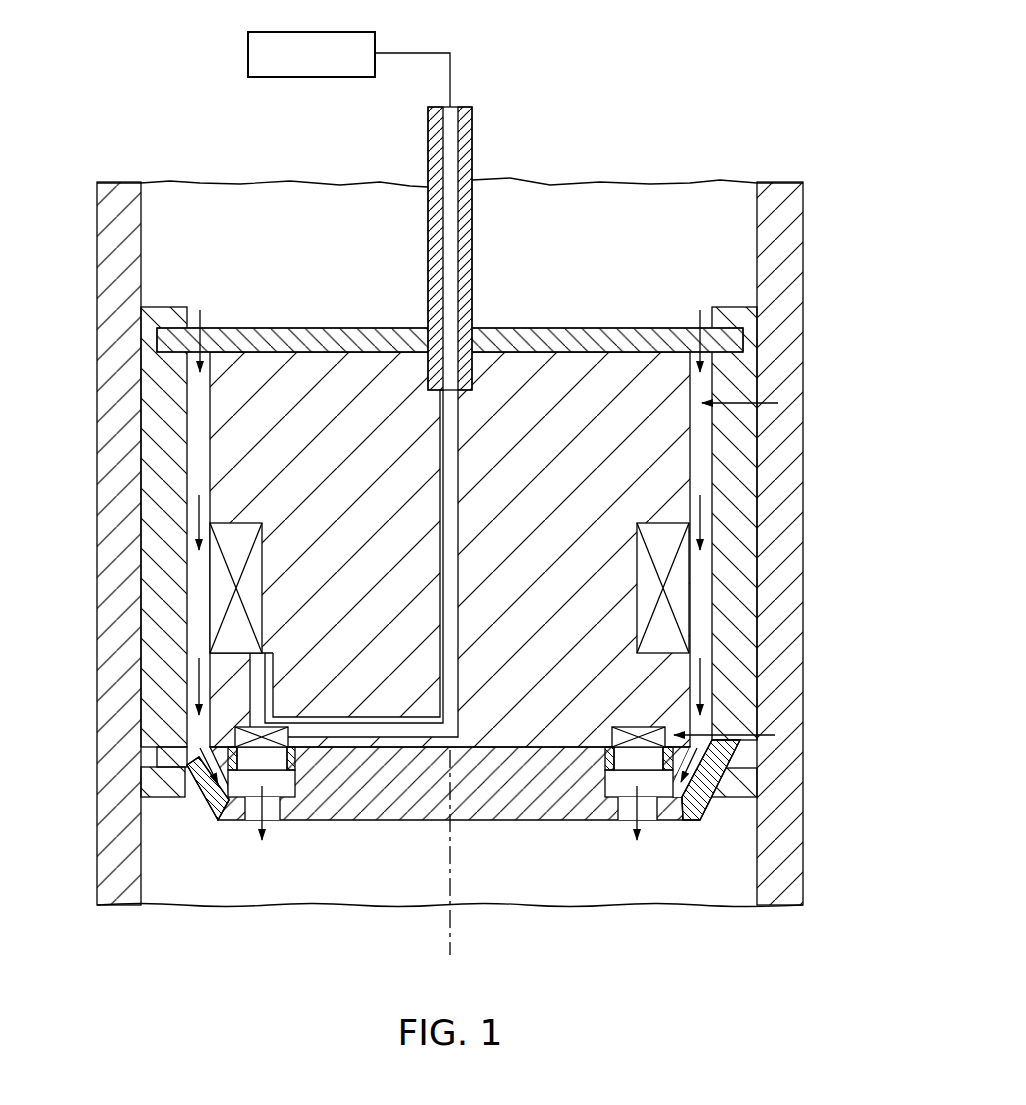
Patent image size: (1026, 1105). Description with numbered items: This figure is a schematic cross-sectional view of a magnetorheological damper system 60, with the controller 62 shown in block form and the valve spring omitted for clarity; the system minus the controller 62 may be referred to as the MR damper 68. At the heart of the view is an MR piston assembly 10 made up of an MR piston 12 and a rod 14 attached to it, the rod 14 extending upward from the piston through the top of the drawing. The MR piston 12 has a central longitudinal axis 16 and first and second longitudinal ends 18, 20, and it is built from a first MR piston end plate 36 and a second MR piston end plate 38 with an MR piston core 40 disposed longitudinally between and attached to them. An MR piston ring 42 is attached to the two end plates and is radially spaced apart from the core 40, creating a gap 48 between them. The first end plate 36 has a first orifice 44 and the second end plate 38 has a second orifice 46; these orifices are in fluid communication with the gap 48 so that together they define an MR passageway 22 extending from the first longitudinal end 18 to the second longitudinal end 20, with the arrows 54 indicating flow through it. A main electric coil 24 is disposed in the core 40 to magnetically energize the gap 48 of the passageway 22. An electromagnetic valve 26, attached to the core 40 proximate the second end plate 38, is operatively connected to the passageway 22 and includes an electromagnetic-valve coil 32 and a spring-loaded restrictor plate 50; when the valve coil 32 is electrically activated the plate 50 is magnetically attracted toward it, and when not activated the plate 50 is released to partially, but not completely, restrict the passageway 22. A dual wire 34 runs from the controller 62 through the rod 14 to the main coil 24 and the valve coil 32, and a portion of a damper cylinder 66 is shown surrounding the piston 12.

The MR piston assembly 10 is at (487, 312).
The MR piston 12 is at (589, 312).
The rod 14 is at (473, 118).
The central longitudinal axis 16 is at (448, 868).
The first longitudinal end 18 is at (315, 328).
The second longitudinal end 20 is at (360, 822).
The MR passageway 22 is at (742, 408).
The main electric coil 24 is at (680, 596).
The electromagnetic valve 26 is at (738, 755).
The electromagnetic-valve coil 32 is at (640, 727).
The dual wire 34 is at (415, 53).
The first MR piston end plate 36 is at (543, 328).
The second MR piston end plate 38 is at (522, 820).
The MR piston core 40 is at (576, 509).
The MR piston ring 42 is at (795, 308).
The first orifice 44 is at (697, 326).
The second orifice 46 is at (627, 820).
The gap 48 is at (708, 569).
The spring-loaded restrictor plate 50 is at (602, 768).
The gas flow 54 is at (703, 514).
The MR damper system 60 is at (640, 115).
The controller 62 is at (313, 77).
The damper cylinder 66 is at (97, 436).
The MR damper 68 is at (813, 217).